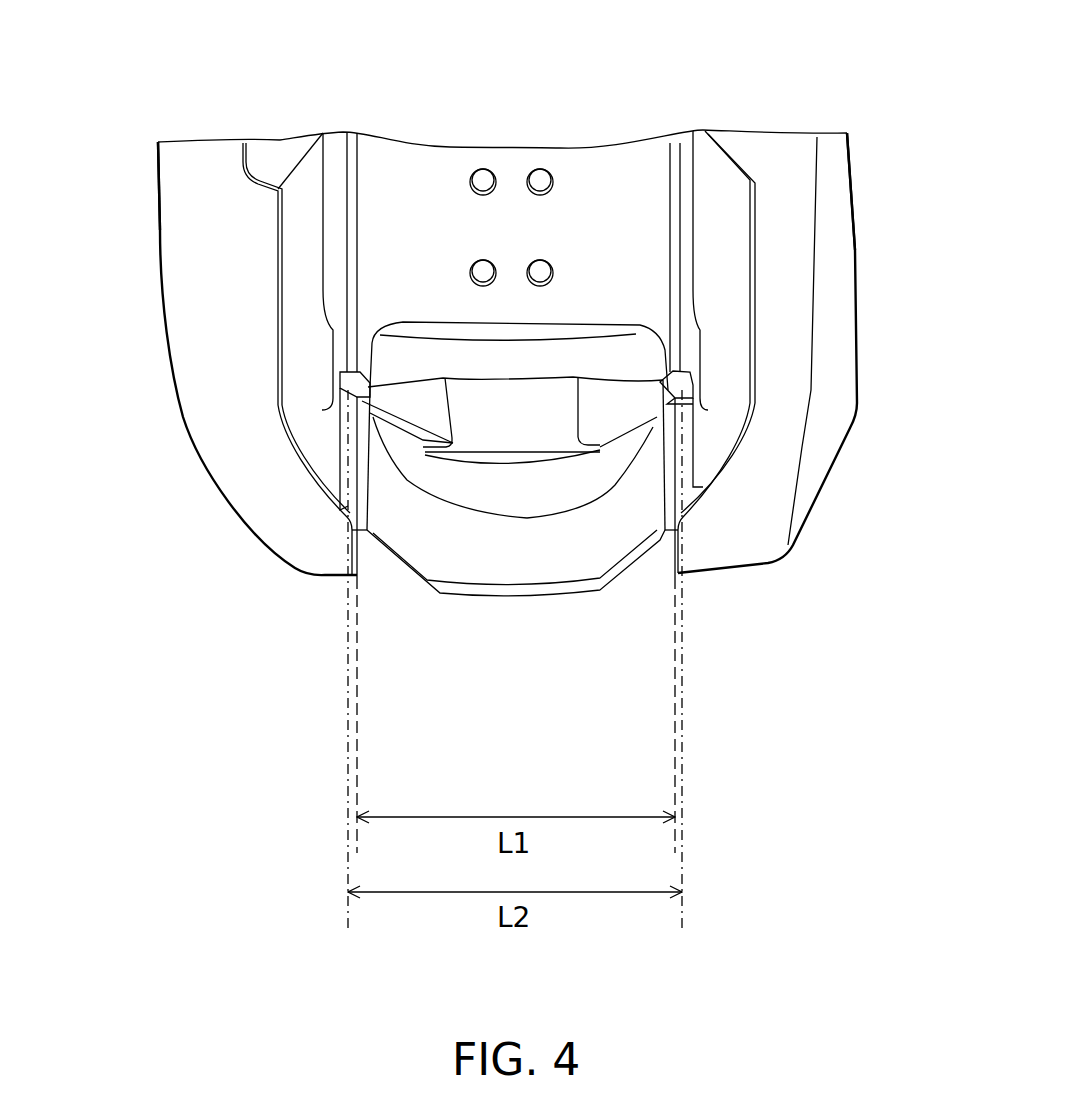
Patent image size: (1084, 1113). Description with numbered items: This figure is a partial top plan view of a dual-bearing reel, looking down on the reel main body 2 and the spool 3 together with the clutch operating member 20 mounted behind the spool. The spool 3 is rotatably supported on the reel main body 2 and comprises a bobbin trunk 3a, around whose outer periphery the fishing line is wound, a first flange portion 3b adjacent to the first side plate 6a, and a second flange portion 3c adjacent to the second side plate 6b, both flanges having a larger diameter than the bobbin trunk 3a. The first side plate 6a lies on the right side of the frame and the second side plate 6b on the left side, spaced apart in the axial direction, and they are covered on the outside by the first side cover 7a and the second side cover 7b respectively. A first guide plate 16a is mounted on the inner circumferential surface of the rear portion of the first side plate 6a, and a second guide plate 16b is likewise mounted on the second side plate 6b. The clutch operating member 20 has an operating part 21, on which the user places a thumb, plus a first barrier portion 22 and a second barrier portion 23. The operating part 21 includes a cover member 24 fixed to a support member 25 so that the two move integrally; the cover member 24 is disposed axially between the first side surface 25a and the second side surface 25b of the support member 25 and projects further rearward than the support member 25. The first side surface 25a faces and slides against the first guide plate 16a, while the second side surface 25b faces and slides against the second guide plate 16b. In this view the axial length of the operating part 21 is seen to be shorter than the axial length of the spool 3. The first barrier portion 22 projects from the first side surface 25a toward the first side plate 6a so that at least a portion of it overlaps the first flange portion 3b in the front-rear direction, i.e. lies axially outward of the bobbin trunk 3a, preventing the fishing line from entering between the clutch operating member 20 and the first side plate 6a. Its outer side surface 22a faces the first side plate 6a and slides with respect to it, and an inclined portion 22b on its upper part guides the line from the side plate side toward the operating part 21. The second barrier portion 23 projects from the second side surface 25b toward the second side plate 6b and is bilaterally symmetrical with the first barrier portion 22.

The reel main body 2 is at (147, 258).
The spool 3 is at (583, 168).
The bobbin trunk 3a is at (432, 170).
The first flange portion 3b is at (677, 157).
The second flange portion 3c is at (353, 150).
The first side plate 6a is at (720, 187).
The second side plate 6b is at (303, 197).
The first side cover 7a is at (780, 167).
The second side cover 7b is at (193, 177).
The first guide plate 16a is at (690, 435).
The second guide plate 16b is at (342, 432).
The clutch operating member 20 is at (582, 722).
The operating part 21 is at (510, 674).
The first barrier portion 22 is at (671, 401).
The outer side surface 22a is at (665, 383).
The inclined portion 22b is at (663, 378).
The second barrier portion 23 is at (362, 401).
The cover member 24 is at (487, 550).
The support member 25 is at (398, 585).
The first side surface 25a is at (680, 473).
The second side surface 25b is at (357, 472).